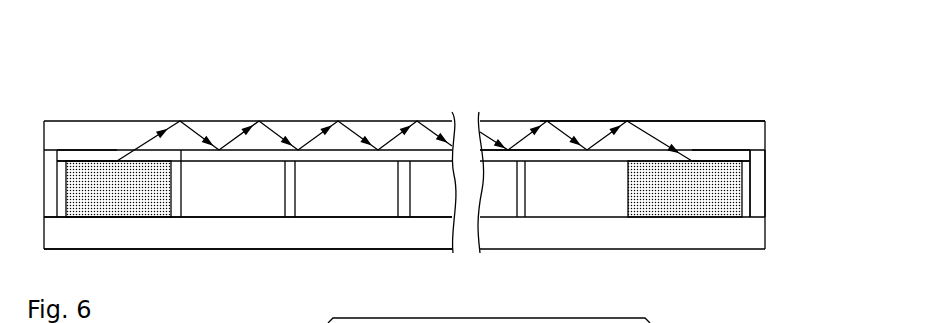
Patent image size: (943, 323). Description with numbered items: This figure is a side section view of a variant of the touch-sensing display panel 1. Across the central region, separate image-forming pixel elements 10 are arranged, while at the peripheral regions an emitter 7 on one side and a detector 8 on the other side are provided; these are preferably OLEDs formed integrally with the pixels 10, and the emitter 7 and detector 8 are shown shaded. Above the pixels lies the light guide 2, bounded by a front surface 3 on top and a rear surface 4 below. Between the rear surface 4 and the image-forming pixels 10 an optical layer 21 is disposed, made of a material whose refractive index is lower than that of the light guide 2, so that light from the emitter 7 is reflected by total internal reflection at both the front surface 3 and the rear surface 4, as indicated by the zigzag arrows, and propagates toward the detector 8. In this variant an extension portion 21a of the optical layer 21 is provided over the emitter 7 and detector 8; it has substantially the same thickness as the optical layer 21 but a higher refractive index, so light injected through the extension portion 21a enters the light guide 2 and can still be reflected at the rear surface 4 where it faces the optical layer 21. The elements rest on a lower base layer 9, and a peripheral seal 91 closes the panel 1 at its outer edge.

The touch-sensing display panel 1 is at (735, 83).
The light guide 2 is at (230, 125).
The front surface 3 is at (678, 120).
The rear surface 4 is at (528, 151).
The emitter 7 is at (106, 197).
The detector 8 is at (686, 197).
The base plate 9 is at (167, 244).
The image-forming pixel elements 10 is at (228, 197).
The optical layer 21 is at (323, 157).
The extension portion 21a is at (103, 153).
The peripheral seal 91 is at (758, 182).